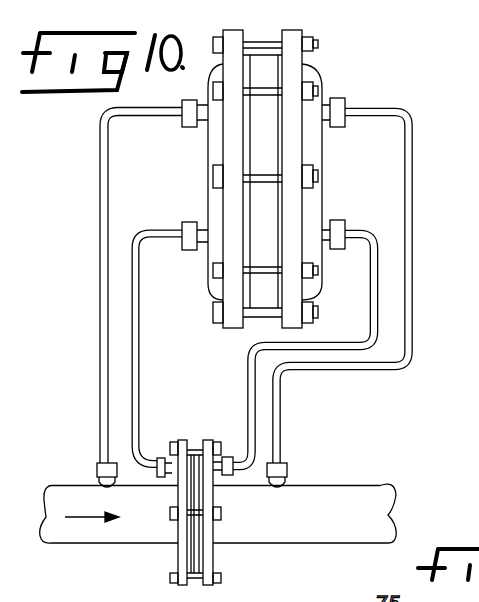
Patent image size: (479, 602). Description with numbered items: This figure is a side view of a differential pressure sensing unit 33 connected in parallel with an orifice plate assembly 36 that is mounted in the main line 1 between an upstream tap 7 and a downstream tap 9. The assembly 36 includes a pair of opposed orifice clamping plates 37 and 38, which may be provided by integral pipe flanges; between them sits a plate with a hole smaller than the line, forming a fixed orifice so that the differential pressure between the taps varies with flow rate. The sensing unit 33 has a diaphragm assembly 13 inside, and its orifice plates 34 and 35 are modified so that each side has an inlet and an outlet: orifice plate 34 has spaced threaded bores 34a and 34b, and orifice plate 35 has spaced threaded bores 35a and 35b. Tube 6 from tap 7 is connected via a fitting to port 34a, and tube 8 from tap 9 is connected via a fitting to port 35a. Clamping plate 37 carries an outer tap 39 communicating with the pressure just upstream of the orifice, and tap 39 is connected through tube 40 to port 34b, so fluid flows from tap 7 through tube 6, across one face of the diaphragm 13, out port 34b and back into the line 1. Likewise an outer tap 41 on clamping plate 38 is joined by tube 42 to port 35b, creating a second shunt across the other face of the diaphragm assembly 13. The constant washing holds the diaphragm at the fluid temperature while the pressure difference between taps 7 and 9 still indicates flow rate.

The line 1 is at (88, 540).
The tube 6 is at (102, 262).
The tap 7 is at (97, 466).
The tube 8 is at (413, 190).
The tap 9 is at (290, 463).
The diaphragm assembly 13 is at (264, 80).
The differential pressure sensing unit 33 is at (330, 88).
The orifice plate 34 is at (212, 160).
The threaded bore 34a is at (217, 117).
The threaded bore 34b is at (222, 241).
The orifice plate 35 is at (318, 197).
The threaded bore 35a is at (302, 103).
The threaded bore 35b is at (302, 227).
The orifice plate assembly 36 is at (219, 551).
The orifice clamping plate 37 is at (176, 558).
The orifice clamping plate 38 is at (214, 528).
The outer tap 39 is at (160, 455).
The tube 40 is at (139, 363).
The outer tap 41 is at (236, 456).
The tube 42 is at (250, 367).